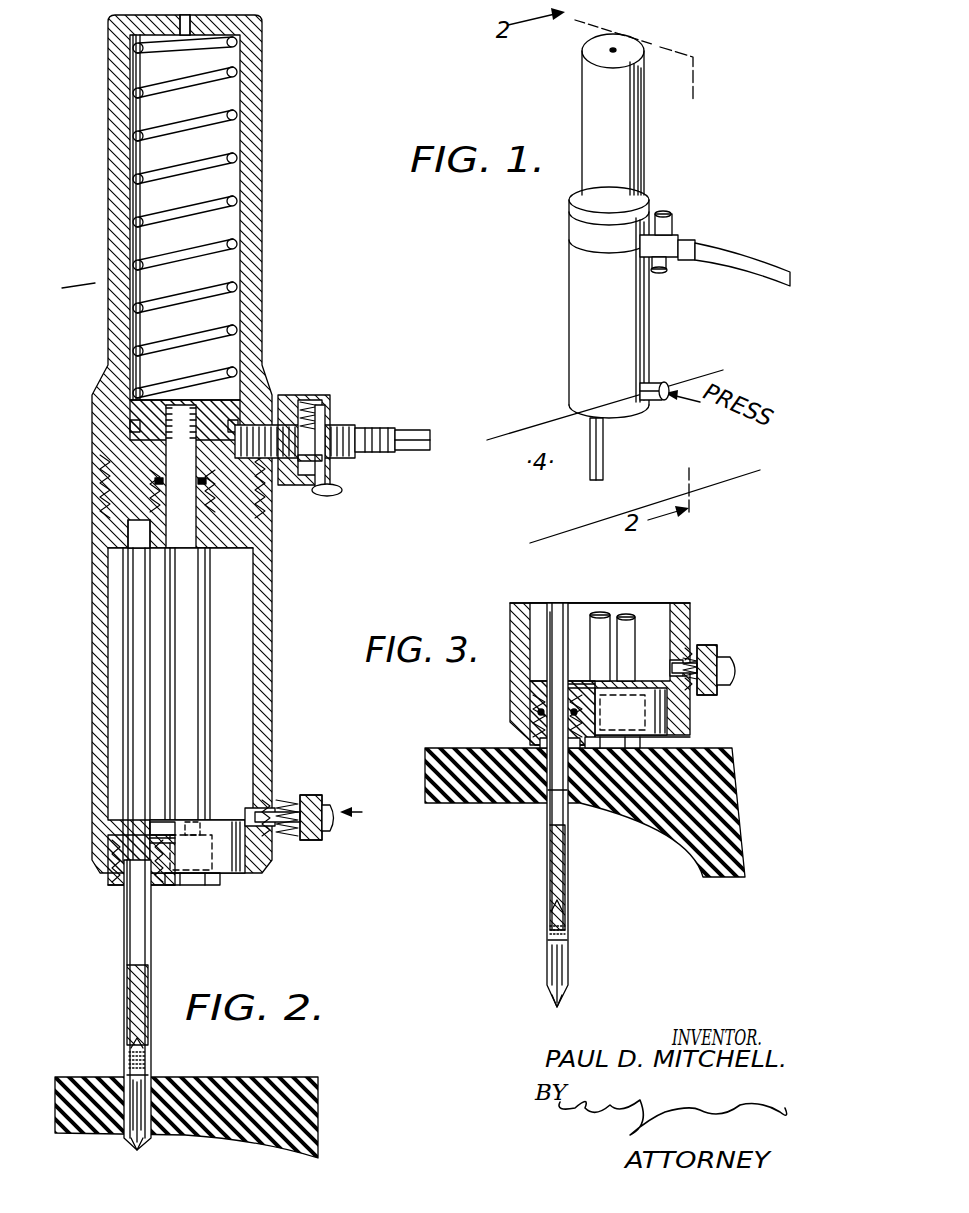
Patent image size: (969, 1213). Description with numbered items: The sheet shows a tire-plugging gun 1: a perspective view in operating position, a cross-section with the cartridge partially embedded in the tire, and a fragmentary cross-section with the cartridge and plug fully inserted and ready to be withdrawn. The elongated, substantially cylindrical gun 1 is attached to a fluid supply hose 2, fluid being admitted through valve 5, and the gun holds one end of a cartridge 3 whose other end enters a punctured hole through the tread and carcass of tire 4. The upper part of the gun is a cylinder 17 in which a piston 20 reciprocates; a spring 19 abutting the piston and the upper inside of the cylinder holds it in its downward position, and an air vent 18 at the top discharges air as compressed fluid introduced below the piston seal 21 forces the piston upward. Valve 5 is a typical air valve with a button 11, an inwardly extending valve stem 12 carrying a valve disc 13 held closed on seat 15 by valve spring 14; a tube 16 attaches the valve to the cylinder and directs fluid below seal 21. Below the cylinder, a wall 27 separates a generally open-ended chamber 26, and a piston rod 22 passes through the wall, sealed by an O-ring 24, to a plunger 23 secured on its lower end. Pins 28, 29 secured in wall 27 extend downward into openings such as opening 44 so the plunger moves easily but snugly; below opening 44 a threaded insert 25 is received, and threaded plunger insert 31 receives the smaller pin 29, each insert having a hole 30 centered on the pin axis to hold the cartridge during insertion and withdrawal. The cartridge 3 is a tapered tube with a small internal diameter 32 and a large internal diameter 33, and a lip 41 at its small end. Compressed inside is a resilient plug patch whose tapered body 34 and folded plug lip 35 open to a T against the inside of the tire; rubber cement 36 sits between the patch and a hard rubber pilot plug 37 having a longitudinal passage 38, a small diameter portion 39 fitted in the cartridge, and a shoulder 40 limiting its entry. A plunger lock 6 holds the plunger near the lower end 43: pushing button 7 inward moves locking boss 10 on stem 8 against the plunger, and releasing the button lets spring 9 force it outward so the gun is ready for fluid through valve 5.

In FIG. 2, the gun 1 is at (95, 283).
In FIG. 1, the gun 1 is at (662, 180).
In FIG. 3, the gun 1 is at (700, 602).
In FIG. 2, the fluid supply hose 2 is at (420, 432).
In FIG. 1, the fluid supply hose 2 is at (742, 262).
In FIG. 2, the cartridge 3 is at (150, 958).
In FIG. 1, the cartridge 3 is at (608, 448).
In FIG. 3, the cartridge 3 is at (578, 843).
In FIG. 2, the tire 4 is at (300, 1110).
In FIG. 3, the tire 4 is at (720, 797).
In FIG. 2, the valve 5 is at (332, 398).
In FIG. 1, the valve 5 is at (666, 286).
In FIG. 2, the plunger lock 6 is at (302, 790).
In FIG. 1, the plunger lock 6 is at (663, 383).
In FIG. 3, the plunger lock 6 is at (716, 648).
In FIG. 2, the button 7 is at (333, 805).
In FIG. 1, the button 7 is at (661, 400).
In FIG. 3, the button 7 is at (740, 670).
In FIG. 2, the stem 8 is at (280, 798).
In FIG. 3, the stem 8 is at (700, 660).
In FIG. 2, the spring 9 is at (295, 838).
In FIG. 3, the spring 9 is at (712, 695).
In FIG. 2, the locking boss 10 is at (258, 812).
In FIG. 3, the locking boss 10 is at (675, 666).
In FIG. 2, the button 11 is at (335, 495).
In FIG. 1, the button 11 is at (665, 276).
In FIG. 2, the valve stem 12 is at (330, 480).
In FIG. 2, the valve disc 13 is at (370, 432).
In FIG. 3, the valve disc 13 is at (690, 740).
In FIG. 2, the valve spring 14 is at (312, 402).
In FIG. 2, the seat 15 is at (312, 448).
In FIG. 2, the tube 16 is at (250, 430).
In FIG. 2, the cylinder 17 is at (120, 198).
In FIG. 1, the cylinder 17 is at (630, 128).
In FIG. 2, the air vent 18 is at (185, 18).
In FIG. 1, the air vent 18 is at (615, 45).
In FIG. 2, the spring 19 is at (138, 133).
In FIG. 2, the piston 20 is at (135, 405).
In FIG. 2, the piston seal 21 is at (132, 427).
In FIG. 2, the piston rod 22 is at (175, 612).
In FIG. 3, the piston rod 22 is at (600, 617).
In FIG. 2, the plunger 23 is at (235, 875).
In FIG. 3, the plunger 23 is at (645, 713).
In FIG. 2, the O-ring 24 is at (157, 481).
In FIG. 2, the insert 25 is at (125, 888).
In FIG. 3, the insert 25 is at (545, 740).
In FIG. 2, the chamber 26 is at (235, 648).
In FIG. 3, the chamber 26 is at (520, 612).
In FIG. 2, the wall 27 is at (235, 535).
In FIG. 2, the pin 28 is at (138, 703).
In FIG. 3, the pin 28 is at (558, 672).
In FIG. 2, the pin 29 is at (205, 693).
In FIG. 3, the pin 29 is at (628, 620).
In FIG. 2, the hole 30 is at (152, 868).
In FIG. 3, the hole 30 is at (545, 708).
In FIG. 2, the threaded plunger insert 31 is at (190, 885).
In FIG. 3, the threaded plunger insert 31 is at (642, 745).
In FIG. 2, the small internal diameter 32 is at (152, 855).
In FIG. 3, the small internal diameter 32 is at (545, 718).
In FIG. 2, the large internal diameter 33 is at (145, 1045).
In FIG. 3, the large internal diameter 33 is at (565, 910).
In FIG. 2, the tapered body 34 is at (126, 938).
In FIG. 3, the tapered body 34 is at (548, 826).
In FIG. 2, the plug lip 35 is at (127, 1035).
In FIG. 3, the plug lip 35 is at (548, 883).
In FIG. 2, the rubber cement 36 is at (130, 1062).
In FIG. 3, the rubber cement 36 is at (545, 795).
In FIG. 2, the pilot plug 37 is at (142, 1135).
In FIG. 3, the pilot plug 37 is at (565, 970).
In FIG. 2, the longitudinal passage 38 is at (134, 1146).
In FIG. 3, the longitudinal passage 38 is at (555, 1000).
In FIG. 2, the small diameter portion 39 is at (150, 1075).
In FIG. 3, the small diameter portion 39 is at (567, 943).
In FIG. 2, the shoulder 40 is at (160, 1095).
In FIG. 3, the shoulder 40 is at (548, 955).
In FIG. 2, the lip 41 is at (150, 840).
In FIG. 3, the lip 41 is at (580, 697).
In FIG. 2, the lower end 43 is at (245, 862).
In FIG. 2, the opening 44 is at (150, 827).
In FIG. 3, the opening 44 is at (592, 690).